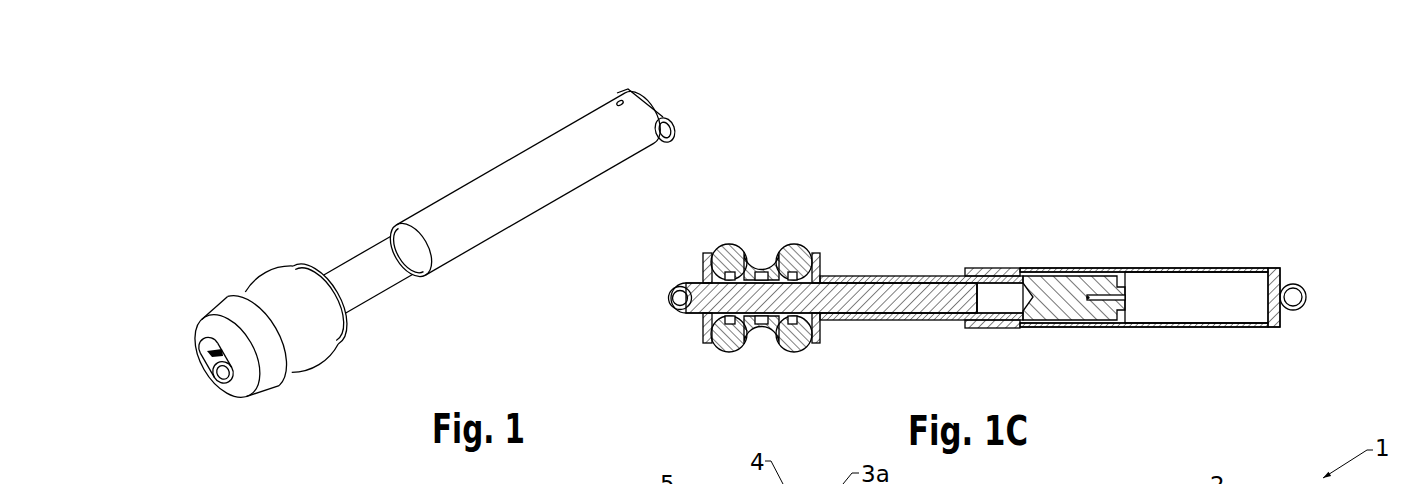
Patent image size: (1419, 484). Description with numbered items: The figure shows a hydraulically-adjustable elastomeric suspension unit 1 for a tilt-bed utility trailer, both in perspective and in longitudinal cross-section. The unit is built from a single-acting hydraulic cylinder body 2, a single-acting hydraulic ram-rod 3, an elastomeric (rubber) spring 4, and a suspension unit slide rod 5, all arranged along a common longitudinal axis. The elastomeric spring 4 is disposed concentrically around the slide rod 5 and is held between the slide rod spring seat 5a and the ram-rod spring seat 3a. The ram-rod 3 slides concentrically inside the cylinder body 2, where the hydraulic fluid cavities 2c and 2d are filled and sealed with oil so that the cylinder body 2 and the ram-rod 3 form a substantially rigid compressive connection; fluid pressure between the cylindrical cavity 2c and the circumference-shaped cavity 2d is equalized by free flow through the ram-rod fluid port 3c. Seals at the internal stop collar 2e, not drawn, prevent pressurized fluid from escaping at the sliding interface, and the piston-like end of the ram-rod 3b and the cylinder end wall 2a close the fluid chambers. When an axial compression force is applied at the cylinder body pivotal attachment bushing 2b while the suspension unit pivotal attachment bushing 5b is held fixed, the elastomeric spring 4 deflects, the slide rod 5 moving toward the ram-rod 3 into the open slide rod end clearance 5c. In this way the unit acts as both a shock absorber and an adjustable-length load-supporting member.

In FIG. 1, the hydraulically-adjustable elastomeric suspension unit 1 is at (342, 113).
In FIG. 1C, the hydraulically-adjustable elastomeric suspension unit 1 is at (1312, 207).
In FIG. 1, the single-acting hydraulic cylinder body 2 is at (450, 193).
In FIG. 1C, the single-acting hydraulic cylinder body 2 is at (1203, 268).
In FIG. 1, the housing end wall 2a is at (615, 100).
In FIG. 1C, the housing end wall 2a is at (1263, 340).
In FIG. 1, the cylinder body pivotal attachment bushing 2b is at (678, 121).
In FIG. 1C, the cylinder body pivotal attachment bushing 2b is at (1308, 289).
In FIG. 1C, the cylinder body hydraulic fluid cavity 2c is at (1193, 307).
In FIG. 1C, the circumference-shaped cavity 2d is at (1063, 271).
In FIG. 1C, the internal stop collar 2e is at (987, 268).
In FIG. 1, the single-acting hydraulic ram-rod 3 is at (360, 253).
In FIG. 1C, the single-acting hydraulic ram-rod 3 is at (887, 278).
In FIG. 1C, the ram-rod spring seat 3a is at (820, 256).
In FIG. 1C, the piston 3b is at (1103, 283).
In FIG. 1C, the ram-rod fluid port 3c is at (1110, 300).
In FIG. 1, the elastomeric spring 4 is at (258, 271).
In FIG. 1C, the elastomeric spring 4 is at (797, 242).
In FIG. 1, the suspension unit slide rod 5 is at (219, 351).
In FIG. 1C, the suspension unit slide rod 5 is at (870, 298).
In FIG. 1, the slide rod spring seat 5a is at (260, 384).
In FIG. 1C, the slide rod spring seat 5a is at (706, 343).
In FIG. 1, the suspension unit pivotal attachment bushing 5b is at (200, 378).
In FIG. 1C, the suspension unit pivotal attachment bushing 5b is at (668, 302).
In FIG. 1C, the slide rod end clearance 5c is at (1000, 298).